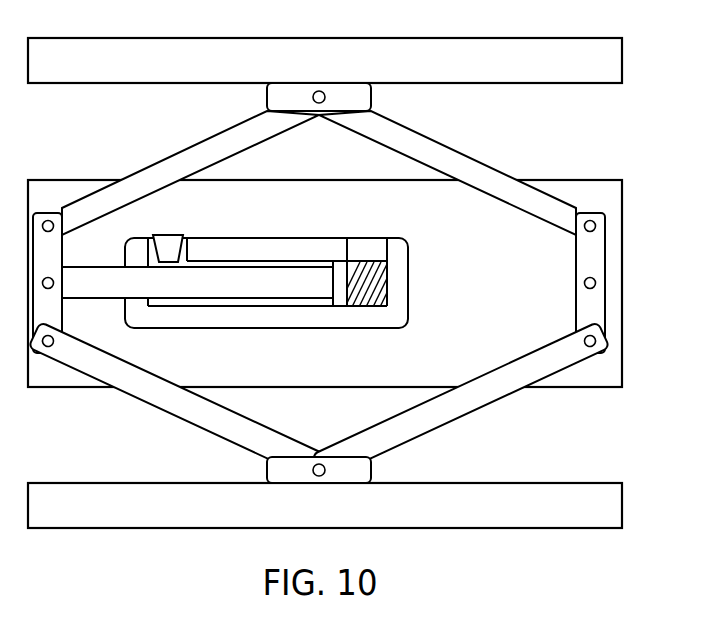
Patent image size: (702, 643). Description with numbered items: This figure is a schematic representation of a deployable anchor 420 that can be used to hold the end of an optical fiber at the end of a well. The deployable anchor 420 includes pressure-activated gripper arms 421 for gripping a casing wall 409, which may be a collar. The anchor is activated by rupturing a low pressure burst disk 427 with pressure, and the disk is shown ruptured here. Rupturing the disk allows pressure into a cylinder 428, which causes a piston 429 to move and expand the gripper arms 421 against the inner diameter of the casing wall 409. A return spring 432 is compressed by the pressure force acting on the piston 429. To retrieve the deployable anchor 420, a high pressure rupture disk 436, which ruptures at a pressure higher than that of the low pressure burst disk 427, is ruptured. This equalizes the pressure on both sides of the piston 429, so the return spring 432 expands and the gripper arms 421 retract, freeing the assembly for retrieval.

The casing wall 409 is at (324, 38).
The deployable anchor 420 is at (344, 283).
The gripper arms 421 is at (478, 159).
The low pressure burst disk 427 is at (177, 235).
The cylinder 428 is at (267, 328).
The piston 429 is at (215, 287).
The return spring 432 is at (382, 281).
The high pressure rupture disk 436 is at (398, 256).